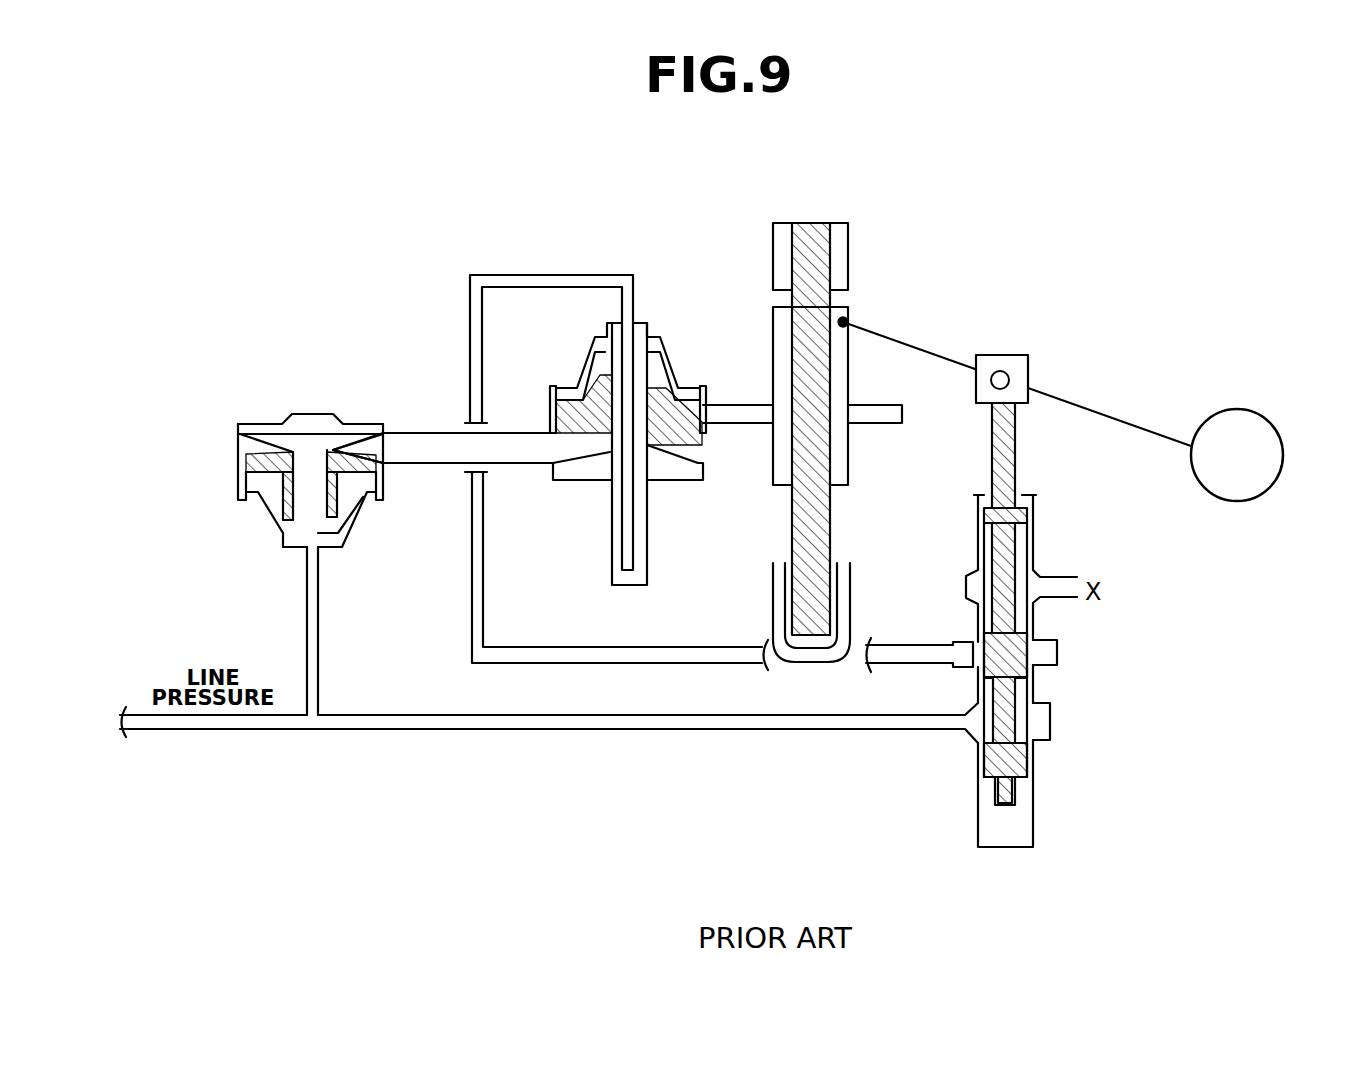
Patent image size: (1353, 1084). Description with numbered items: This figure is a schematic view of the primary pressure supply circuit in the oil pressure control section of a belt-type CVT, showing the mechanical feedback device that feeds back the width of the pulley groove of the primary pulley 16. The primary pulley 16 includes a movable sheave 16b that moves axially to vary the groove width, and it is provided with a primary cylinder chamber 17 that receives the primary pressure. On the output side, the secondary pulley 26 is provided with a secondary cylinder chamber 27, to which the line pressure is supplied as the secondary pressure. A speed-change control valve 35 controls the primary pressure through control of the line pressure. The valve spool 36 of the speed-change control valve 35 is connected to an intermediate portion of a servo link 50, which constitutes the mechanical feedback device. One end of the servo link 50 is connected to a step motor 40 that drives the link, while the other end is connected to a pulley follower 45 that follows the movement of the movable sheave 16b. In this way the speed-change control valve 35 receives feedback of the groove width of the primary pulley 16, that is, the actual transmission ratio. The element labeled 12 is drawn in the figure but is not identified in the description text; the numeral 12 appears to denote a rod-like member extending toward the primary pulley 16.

The rod 12 is at (420, 433).
The primary pulley 16 is at (652, 293).
The movable sheave 16b is at (550, 423).
The primary cylinder chamber 17 is at (603, 362).
The secondary pulley 26 is at (290, 374).
The secondary cylinder chamber 27 is at (352, 495).
The speed-change control valve 35 is at (1068, 690).
The valve spool 36 is at (1017, 458).
The step motor 40 is at (1232, 409).
The pulley follower 45 is at (772, 341).
The servo link 50 is at (1098, 410).